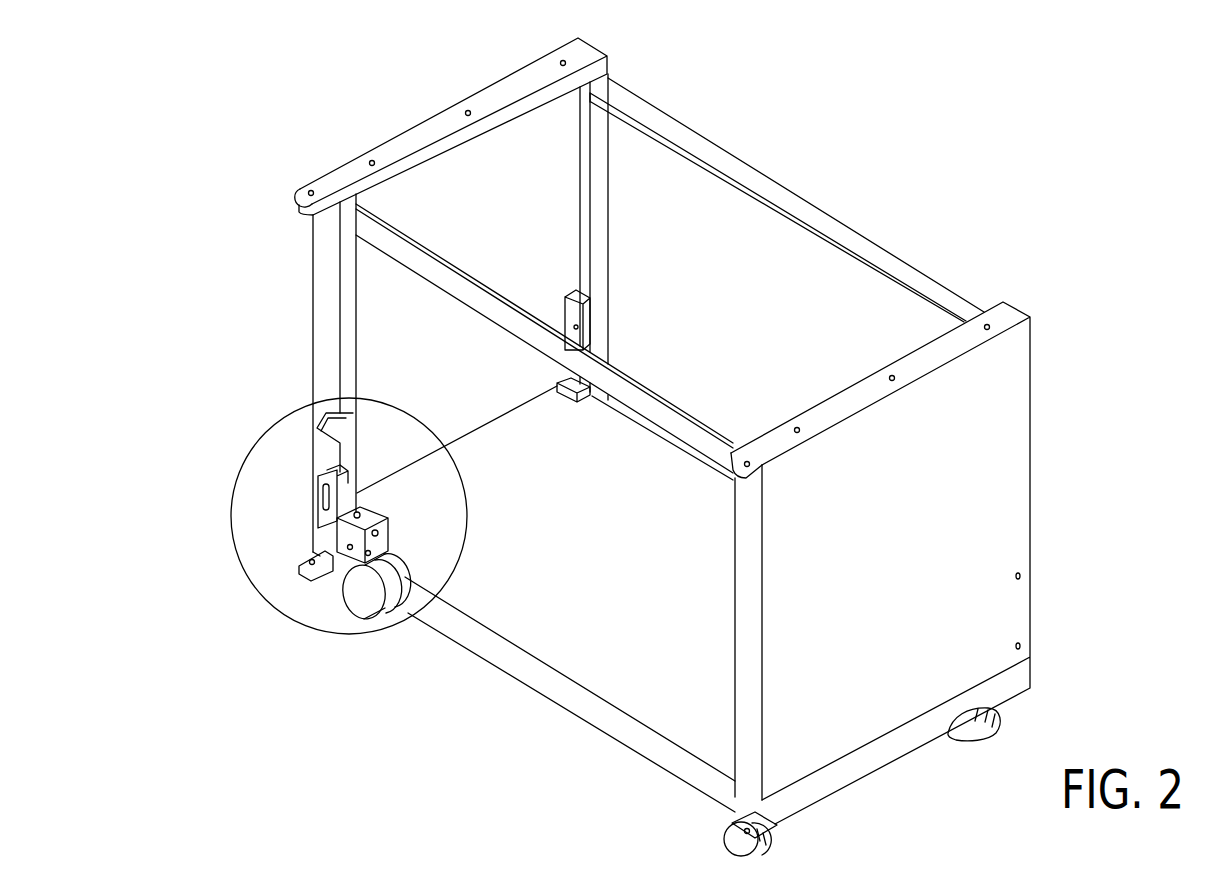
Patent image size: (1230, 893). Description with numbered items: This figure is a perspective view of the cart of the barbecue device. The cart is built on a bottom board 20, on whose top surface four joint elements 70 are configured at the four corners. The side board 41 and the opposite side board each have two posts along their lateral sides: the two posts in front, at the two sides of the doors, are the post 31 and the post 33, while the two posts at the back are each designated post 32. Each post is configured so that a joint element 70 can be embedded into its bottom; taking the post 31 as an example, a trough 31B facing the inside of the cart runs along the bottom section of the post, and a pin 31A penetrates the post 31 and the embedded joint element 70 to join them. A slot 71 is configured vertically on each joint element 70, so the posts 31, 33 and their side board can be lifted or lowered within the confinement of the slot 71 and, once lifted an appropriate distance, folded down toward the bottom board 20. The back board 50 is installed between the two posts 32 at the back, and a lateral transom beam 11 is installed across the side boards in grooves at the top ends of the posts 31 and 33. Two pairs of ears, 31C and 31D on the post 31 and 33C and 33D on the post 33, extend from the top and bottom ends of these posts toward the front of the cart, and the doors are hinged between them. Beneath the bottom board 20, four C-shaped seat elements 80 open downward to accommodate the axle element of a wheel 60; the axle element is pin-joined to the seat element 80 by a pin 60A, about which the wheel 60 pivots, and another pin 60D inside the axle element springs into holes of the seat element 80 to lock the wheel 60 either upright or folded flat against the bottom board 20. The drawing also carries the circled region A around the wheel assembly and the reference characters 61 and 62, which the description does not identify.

The lateral transom beam 11 is at (512, 322).
The bottom board 20 is at (545, 620).
The post 31 is at (352, 312).
The pin 31A is at (328, 508).
The trough 31B is at (327, 447).
The ear 31C is at (303, 192).
The ear 31D is at (322, 588).
The post 32 is at (582, 155).
The post 33 is at (737, 588).
The ear 33C is at (760, 452).
The ear 33D is at (775, 812).
The side board 41 is at (965, 452).
The back board 50 is at (740, 207).
The wheel 60 is at (363, 598).
The pin 60A is at (385, 515).
The pin 60D is at (405, 570).
The caster 61 is at (732, 830).
The caster 62 is at (963, 735).
The joint element 70 is at (310, 570).
The slot 71 is at (327, 495).
The C-shaped seat element 80 is at (365, 508).
The enlarged detail area A is at (462, 482).